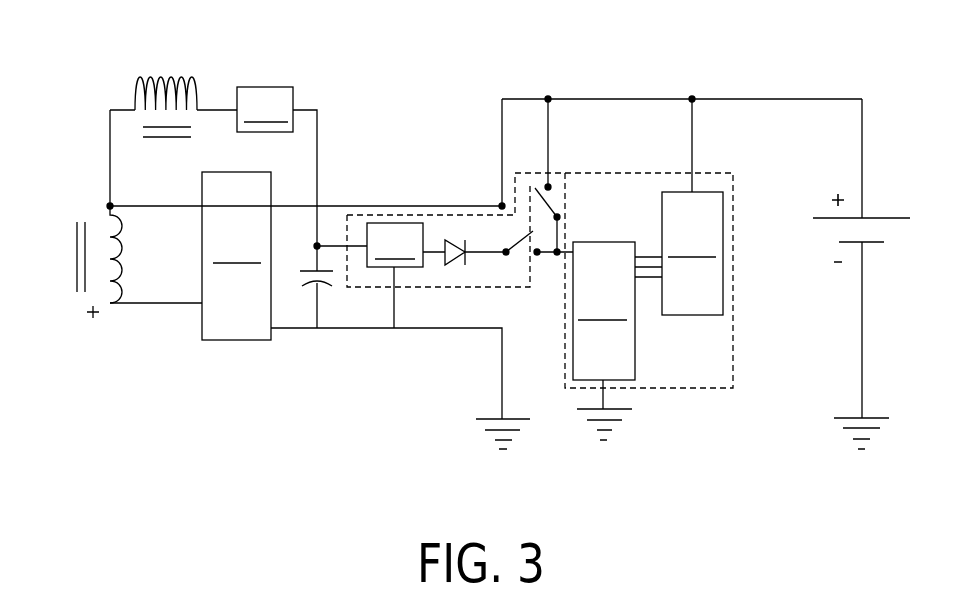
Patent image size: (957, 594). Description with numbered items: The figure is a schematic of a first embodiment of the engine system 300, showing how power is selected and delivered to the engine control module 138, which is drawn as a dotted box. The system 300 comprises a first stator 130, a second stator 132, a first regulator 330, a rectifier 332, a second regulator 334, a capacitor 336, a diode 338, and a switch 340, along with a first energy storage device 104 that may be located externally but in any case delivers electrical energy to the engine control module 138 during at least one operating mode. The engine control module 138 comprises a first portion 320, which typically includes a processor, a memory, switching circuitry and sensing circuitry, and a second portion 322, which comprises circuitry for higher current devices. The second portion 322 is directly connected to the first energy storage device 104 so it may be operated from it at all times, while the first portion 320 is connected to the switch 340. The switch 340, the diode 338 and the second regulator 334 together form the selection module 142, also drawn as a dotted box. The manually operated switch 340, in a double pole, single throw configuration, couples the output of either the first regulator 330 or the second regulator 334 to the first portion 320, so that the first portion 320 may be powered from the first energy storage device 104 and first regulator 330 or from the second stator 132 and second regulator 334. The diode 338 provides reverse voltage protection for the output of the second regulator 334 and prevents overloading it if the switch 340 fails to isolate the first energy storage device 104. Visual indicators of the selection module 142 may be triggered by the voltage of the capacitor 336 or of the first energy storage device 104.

The engine system 300 is at (782, 66).
The first energy storage device 104 is at (861, 224).
The first stator 130 is at (75, 301).
The second stator 132 is at (127, 79).
The engine control module 138 is at (682, 373).
The selection module 142 is at (452, 223).
The first portion 320 is at (617, 311).
The second portion 322 is at (692, 253).
The first regulator 330 is at (236, 256).
The rectifier 332 is at (265, 109).
The second regulator 334 is at (381, 245).
The capacitor 336 is at (312, 283).
The diode 338 is at (455, 278).
The switch 340 is at (561, 192).